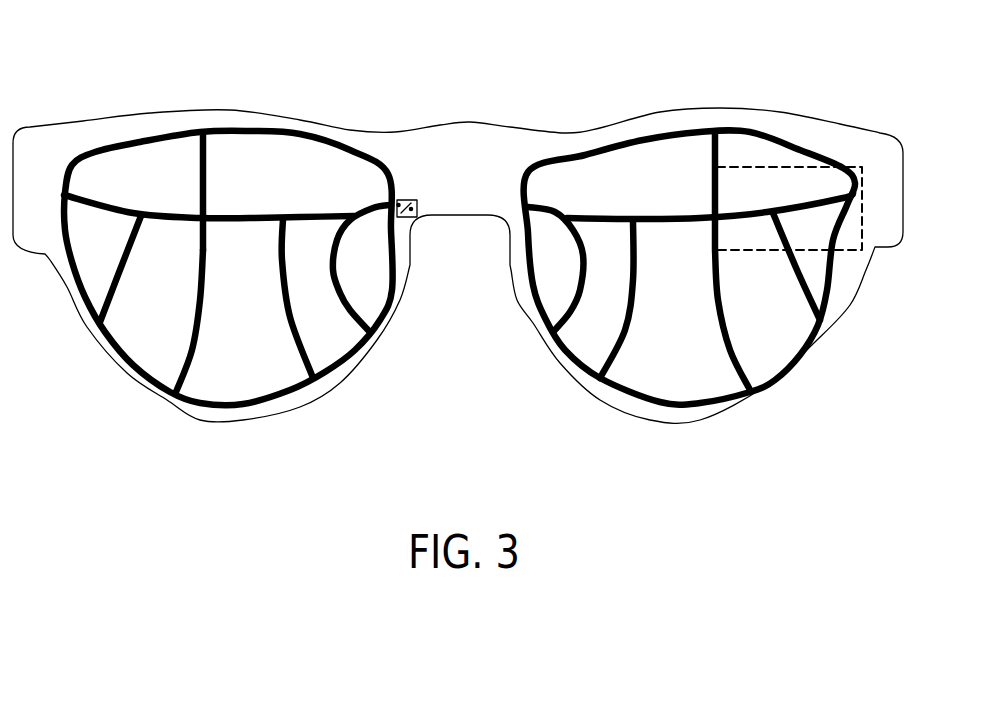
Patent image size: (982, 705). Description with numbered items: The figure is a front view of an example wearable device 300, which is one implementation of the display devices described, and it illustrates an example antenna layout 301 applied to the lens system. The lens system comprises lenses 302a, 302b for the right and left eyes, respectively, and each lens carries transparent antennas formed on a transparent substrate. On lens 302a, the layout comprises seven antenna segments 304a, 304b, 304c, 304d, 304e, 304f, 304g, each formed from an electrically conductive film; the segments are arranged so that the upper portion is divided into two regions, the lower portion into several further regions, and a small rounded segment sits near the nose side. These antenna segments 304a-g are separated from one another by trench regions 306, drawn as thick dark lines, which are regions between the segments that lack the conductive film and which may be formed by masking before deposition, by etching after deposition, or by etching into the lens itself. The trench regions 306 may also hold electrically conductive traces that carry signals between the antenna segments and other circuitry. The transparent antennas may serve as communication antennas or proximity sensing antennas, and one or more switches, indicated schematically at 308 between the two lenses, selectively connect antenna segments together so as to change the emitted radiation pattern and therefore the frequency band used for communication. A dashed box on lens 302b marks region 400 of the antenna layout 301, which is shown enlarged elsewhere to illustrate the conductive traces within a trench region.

The wearable device 300 is at (38, 40).
The antenna layout 301 is at (482, 158).
The lens 302a is at (301, 452).
The lens 302b is at (611, 448).
The antenna segment 304a is at (175, 188).
The antenna segment 304b is at (292, 188).
The antenna segment 304c is at (127, 242).
The antenna segment 304d is at (172, 324).
The antenna segment 304e is at (258, 368).
The antenna segment 304f is at (330, 340).
The antenna segment 304g is at (367, 287).
The trench regions 306 is at (85, 196).
The switches 308 is at (417, 200).
The region 400 is at (866, 249).